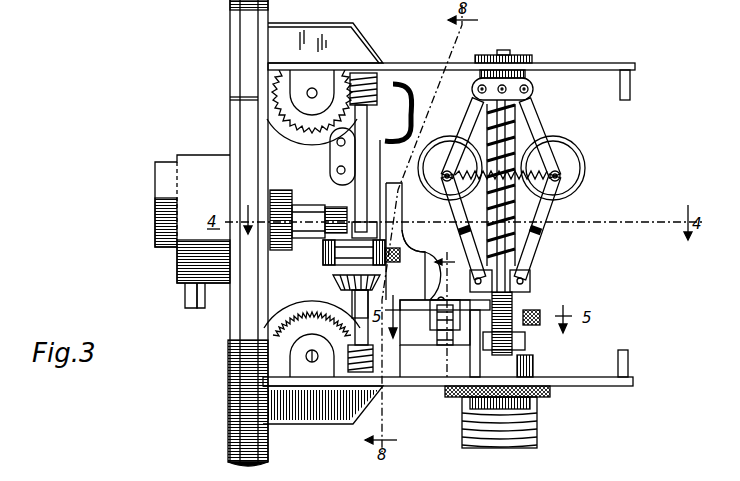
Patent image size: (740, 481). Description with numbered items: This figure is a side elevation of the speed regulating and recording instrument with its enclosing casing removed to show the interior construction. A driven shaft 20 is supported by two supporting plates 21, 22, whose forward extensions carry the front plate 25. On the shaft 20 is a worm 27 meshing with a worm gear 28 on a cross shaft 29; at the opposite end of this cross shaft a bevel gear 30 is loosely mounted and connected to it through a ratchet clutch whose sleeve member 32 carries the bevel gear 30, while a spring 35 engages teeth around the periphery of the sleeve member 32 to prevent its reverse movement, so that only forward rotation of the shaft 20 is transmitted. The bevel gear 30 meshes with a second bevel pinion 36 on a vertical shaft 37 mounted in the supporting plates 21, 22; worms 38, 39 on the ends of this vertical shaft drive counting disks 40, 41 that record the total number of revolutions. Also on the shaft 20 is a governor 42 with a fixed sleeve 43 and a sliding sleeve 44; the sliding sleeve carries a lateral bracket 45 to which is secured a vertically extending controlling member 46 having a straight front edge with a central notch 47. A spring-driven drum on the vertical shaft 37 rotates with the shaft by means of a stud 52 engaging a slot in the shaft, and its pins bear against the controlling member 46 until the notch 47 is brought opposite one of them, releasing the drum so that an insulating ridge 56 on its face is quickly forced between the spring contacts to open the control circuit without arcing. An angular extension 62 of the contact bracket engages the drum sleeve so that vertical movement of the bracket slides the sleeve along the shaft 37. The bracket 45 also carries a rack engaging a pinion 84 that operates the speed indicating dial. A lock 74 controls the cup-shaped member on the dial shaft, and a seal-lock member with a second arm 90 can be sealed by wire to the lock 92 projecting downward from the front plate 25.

The shaft 20 is at (520, 113).
The supporting plate 21 is at (594, 386).
The supporting plate 22 is at (590, 70).
The front plate 25 is at (226, 444).
The worm 27 is at (535, 327).
The worm gear 28 is at (510, 347).
The cross shaft 29 is at (524, 312).
The bevel gear 30 is at (432, 262).
The sleeve member 32 is at (440, 378).
The spring 35 is at (437, 352).
The second bevel pinion 36 is at (333, 283).
The vertical shaft 37 is at (384, 346).
The worm 38 is at (357, 378).
The worm 39 is at (368, 68).
The counting disk 40 is at (276, 316).
The counting disk 41 is at (270, 123).
The governor 42 is at (568, 141).
The fixed sleeve 43 is at (523, 80).
The sliding sleeve 44 is at (530, 289).
The bracket 45 is at (455, 297).
The controlling member 46 is at (400, 206).
The notch 47 is at (424, 254).
The stud 52 is at (366, 194).
The ridge 56 is at (326, 248).
The angular extension 62 is at (330, 264).
The lock 74 is at (157, 173).
The pinion 84 is at (326, 209).
The second arm 90 is at (201, 310).
The lock 92 is at (188, 310).